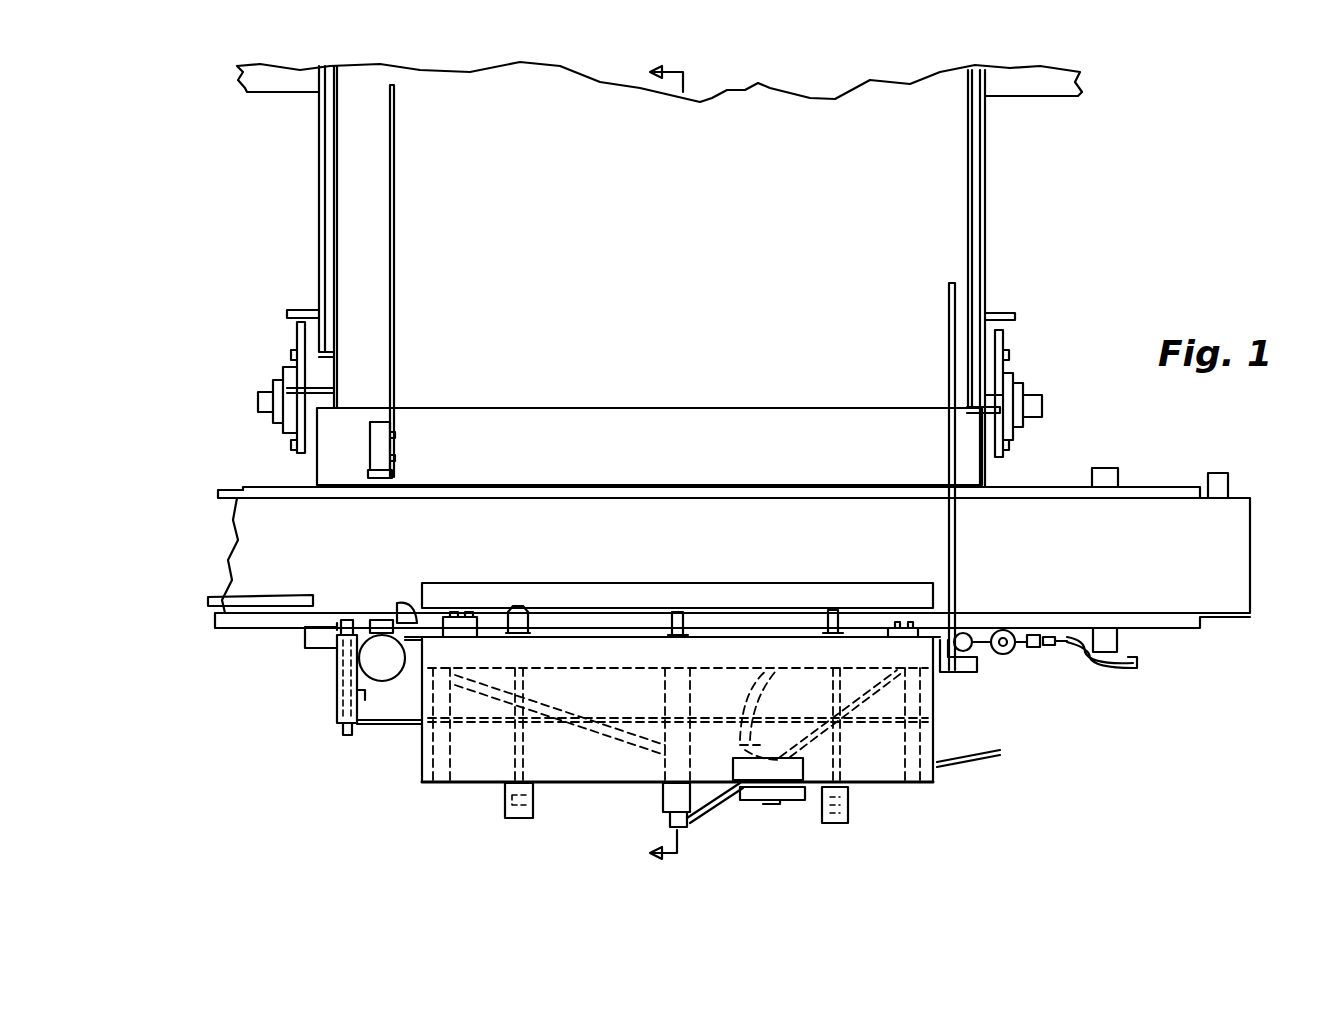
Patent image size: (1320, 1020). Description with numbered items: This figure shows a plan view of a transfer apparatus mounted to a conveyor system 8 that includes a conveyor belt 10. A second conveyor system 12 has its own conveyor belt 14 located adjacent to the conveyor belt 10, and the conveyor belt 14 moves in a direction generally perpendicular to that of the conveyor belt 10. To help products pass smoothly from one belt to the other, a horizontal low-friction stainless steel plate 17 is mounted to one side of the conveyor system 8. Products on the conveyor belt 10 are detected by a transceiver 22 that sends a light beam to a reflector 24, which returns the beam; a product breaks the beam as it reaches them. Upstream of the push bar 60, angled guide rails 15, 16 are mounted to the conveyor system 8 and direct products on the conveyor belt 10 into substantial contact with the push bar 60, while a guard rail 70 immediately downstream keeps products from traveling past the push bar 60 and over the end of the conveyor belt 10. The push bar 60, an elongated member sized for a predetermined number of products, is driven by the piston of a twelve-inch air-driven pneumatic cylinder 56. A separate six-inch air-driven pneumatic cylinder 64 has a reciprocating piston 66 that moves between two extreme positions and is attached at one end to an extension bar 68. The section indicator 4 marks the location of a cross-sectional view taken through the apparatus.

The section line 4- 4 is at (645, 465).
The conveyor system 8 is at (1045, 487).
The conveyor belt 10 is at (1205, 535).
The second conveyor system 12 is at (986, 148).
The conveyor belt 14 is at (947, 248).
The guide rail 15 is at (218, 493).
The guide rail 16 is at (205, 600).
The low-friction stainless steel plate 17 is at (425, 433).
The transceiver 22 is at (385, 668).
The reflector 24 is at (368, 475).
The cylinder 56 is at (667, 800).
The push bar 60 is at (893, 598).
The cylinder 64 is at (337, 690).
The piston 66 is at (335, 668).
The extension bar 68 is at (342, 627).
The guard rail 70 is at (950, 373).